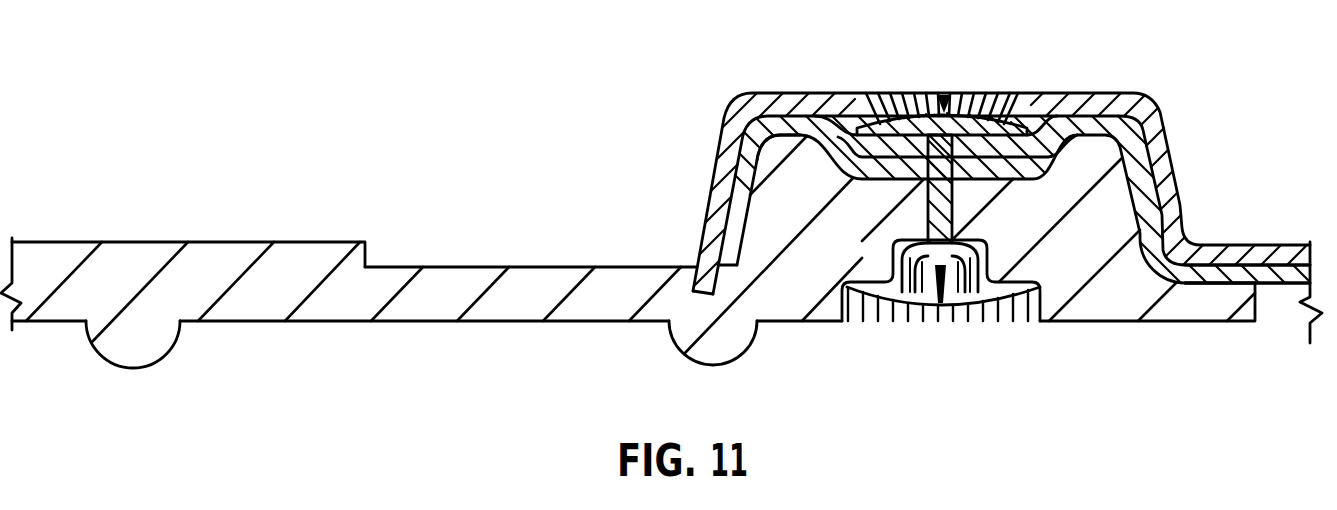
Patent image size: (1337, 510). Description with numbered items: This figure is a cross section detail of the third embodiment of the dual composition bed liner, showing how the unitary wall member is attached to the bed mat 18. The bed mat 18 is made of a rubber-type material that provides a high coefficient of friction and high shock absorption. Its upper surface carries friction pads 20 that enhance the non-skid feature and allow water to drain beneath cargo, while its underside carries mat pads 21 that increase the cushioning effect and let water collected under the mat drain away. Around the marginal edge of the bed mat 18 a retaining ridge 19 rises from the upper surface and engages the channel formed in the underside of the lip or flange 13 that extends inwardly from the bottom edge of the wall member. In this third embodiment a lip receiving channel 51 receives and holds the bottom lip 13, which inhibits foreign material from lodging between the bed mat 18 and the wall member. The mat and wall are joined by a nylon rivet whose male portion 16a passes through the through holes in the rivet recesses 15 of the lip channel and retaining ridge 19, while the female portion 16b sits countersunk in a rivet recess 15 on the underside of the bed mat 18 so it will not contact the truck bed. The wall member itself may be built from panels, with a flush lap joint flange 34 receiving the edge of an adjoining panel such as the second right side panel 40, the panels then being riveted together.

The lip or flange 13 is at (713, 235).
The rivet recesses 15 is at (957, 78).
The male portion of nylon rivet 16a is at (1000, 108).
The female portion of nylon rivet 16b is at (997, 290).
The bed mat 18 is at (447, 308).
The retaining ridge 19 is at (785, 143).
The friction pads 20 is at (218, 250).
The mat pads 21 is at (147, 350).
The flush lap joint flange 34 is at (1140, 168).
The second right side panel 40 is at (1183, 230).
The lip receiving channel 51 is at (676, 302).